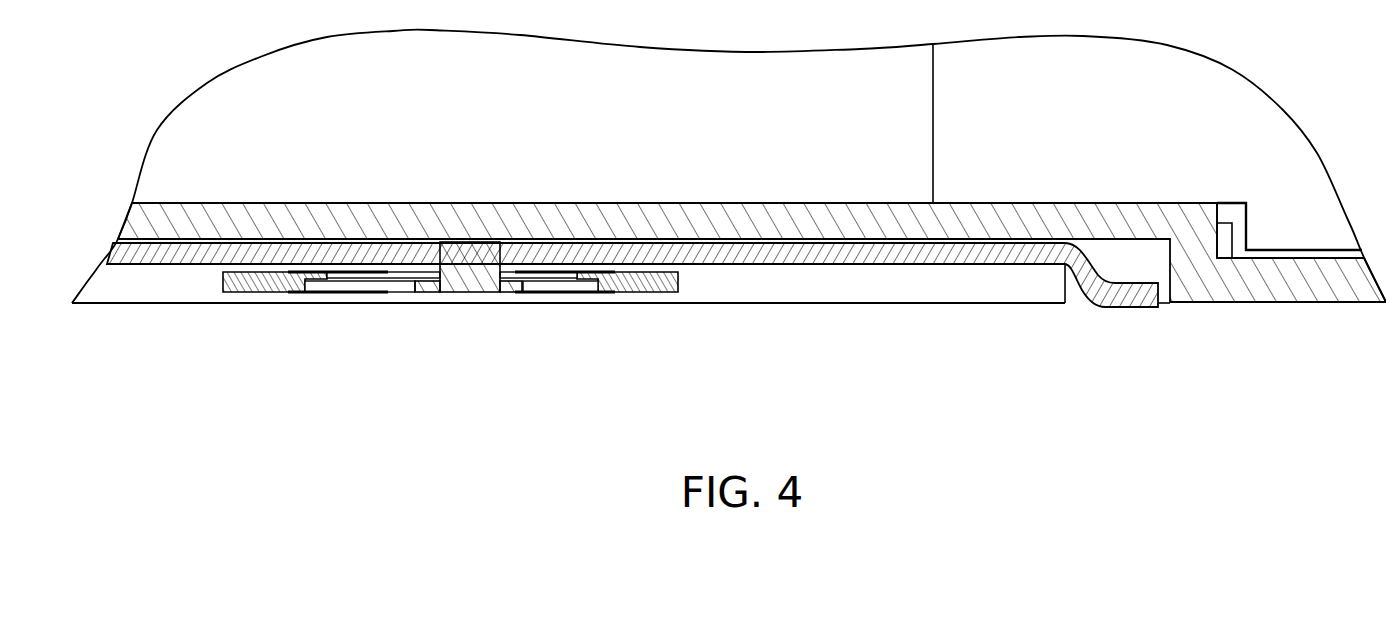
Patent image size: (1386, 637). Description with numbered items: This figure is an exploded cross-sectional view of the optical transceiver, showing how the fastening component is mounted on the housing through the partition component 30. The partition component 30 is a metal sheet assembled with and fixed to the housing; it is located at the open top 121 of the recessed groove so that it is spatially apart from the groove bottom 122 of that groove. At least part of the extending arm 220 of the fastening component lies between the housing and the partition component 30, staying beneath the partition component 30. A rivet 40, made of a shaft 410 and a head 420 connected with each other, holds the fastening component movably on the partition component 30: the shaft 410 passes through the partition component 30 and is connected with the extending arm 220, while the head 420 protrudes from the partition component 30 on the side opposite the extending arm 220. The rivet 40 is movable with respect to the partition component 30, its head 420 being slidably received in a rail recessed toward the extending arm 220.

The open top 121 is at (779, 311).
The groove bottom 122 is at (859, 252).
The extending arm 220 is at (175, 258).
The partition component 30 is at (647, 285).
The rivet 40 is at (457, 331).
The shaft 410 is at (473, 255).
The head 420 is at (530, 367).